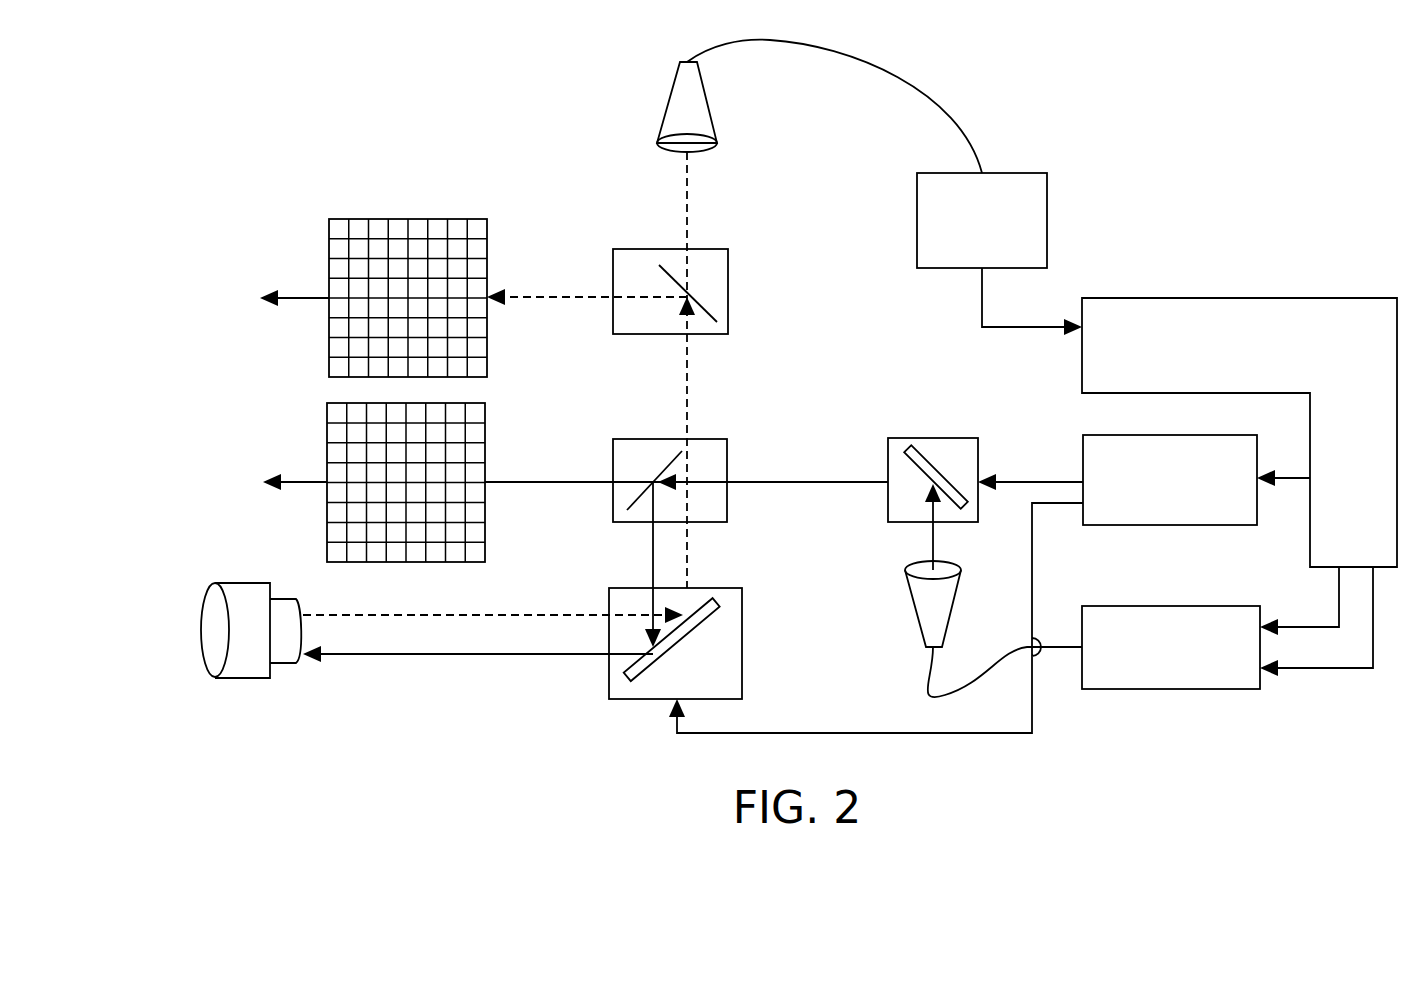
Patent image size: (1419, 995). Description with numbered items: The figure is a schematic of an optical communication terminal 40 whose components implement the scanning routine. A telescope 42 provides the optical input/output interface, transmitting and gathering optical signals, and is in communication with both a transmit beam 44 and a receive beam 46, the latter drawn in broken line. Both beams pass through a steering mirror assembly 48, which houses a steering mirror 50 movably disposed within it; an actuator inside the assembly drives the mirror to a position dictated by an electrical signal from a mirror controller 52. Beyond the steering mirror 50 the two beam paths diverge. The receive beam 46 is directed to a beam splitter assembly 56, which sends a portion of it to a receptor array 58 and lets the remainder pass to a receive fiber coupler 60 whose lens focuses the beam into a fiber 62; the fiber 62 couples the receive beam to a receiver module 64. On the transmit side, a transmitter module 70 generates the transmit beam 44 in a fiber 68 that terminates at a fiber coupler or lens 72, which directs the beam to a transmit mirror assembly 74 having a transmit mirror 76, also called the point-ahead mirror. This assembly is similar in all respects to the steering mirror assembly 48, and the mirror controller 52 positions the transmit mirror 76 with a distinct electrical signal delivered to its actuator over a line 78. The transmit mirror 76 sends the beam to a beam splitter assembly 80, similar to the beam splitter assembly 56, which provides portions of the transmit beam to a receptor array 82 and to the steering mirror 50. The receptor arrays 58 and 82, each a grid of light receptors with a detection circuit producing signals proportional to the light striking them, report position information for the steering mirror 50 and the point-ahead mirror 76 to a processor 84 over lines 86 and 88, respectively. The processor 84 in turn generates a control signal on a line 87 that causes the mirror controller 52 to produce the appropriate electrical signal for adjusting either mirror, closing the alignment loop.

The optical communication terminal 40 is at (1260, 126).
The telescope 42 is at (244, 678).
The transmit beam 44 is at (466, 656).
The receive beam 46 is at (521, 614).
The steering mirror assembly 48 is at (742, 645).
The steering mirror 50 is at (644, 683).
The mirror controller 52 is at (1210, 525).
The beam splitter assembly 56 is at (728, 293).
The receptor array 58 is at (446, 219).
The receive fiber coupler 60 is at (665, 104).
The fiber 62 is at (846, 54).
The receiver module 64 is at (1047, 218).
The fiber 68 is at (1058, 648).
The transmitter module 70 is at (1215, 689).
The fiber coupler or lens 72 is at (908, 606).
The transmit mirror assembly 74 is at (954, 438).
The transmit mirror 76 is at (924, 447).
The line 78 is at (1020, 480).
The beam splitter assembly 80 is at (727, 460).
The receptor array 82 is at (388, 562).
The processor 84 is at (1336, 298).
The line 86 is at (302, 297).
The line 87 is at (1296, 477).
The line 88 is at (306, 481).